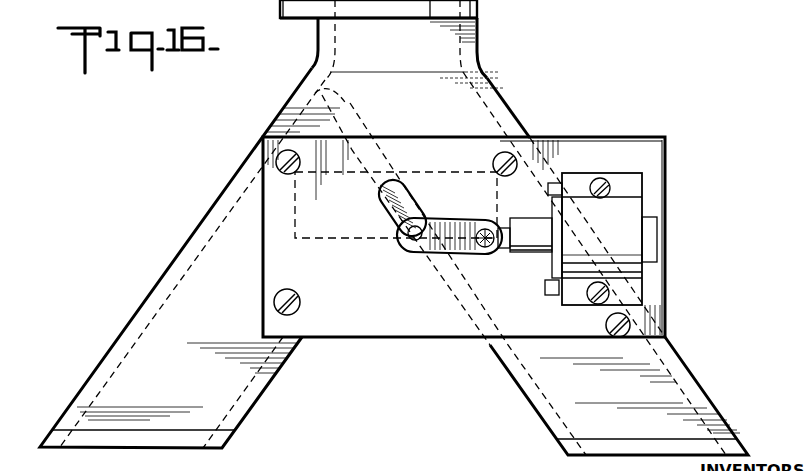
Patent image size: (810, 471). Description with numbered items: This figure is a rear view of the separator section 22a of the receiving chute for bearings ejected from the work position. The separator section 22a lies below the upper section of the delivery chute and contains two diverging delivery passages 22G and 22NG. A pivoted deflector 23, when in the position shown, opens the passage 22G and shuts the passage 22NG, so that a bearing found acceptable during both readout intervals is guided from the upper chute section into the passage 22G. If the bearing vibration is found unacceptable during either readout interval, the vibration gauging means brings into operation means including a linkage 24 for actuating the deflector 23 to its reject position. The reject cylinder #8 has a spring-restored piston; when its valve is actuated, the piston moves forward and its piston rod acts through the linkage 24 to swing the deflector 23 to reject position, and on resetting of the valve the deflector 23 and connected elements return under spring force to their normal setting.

The separator section 22a is at (475, 35).
The delivery passage 22NG is at (263, 393).
The delivery passage 22G is at (522, 383).
The pivoted deflector 23 is at (350, 107).
The linkage 24 is at (430, 252).
The reject cylinder 8 is at (627, 214).